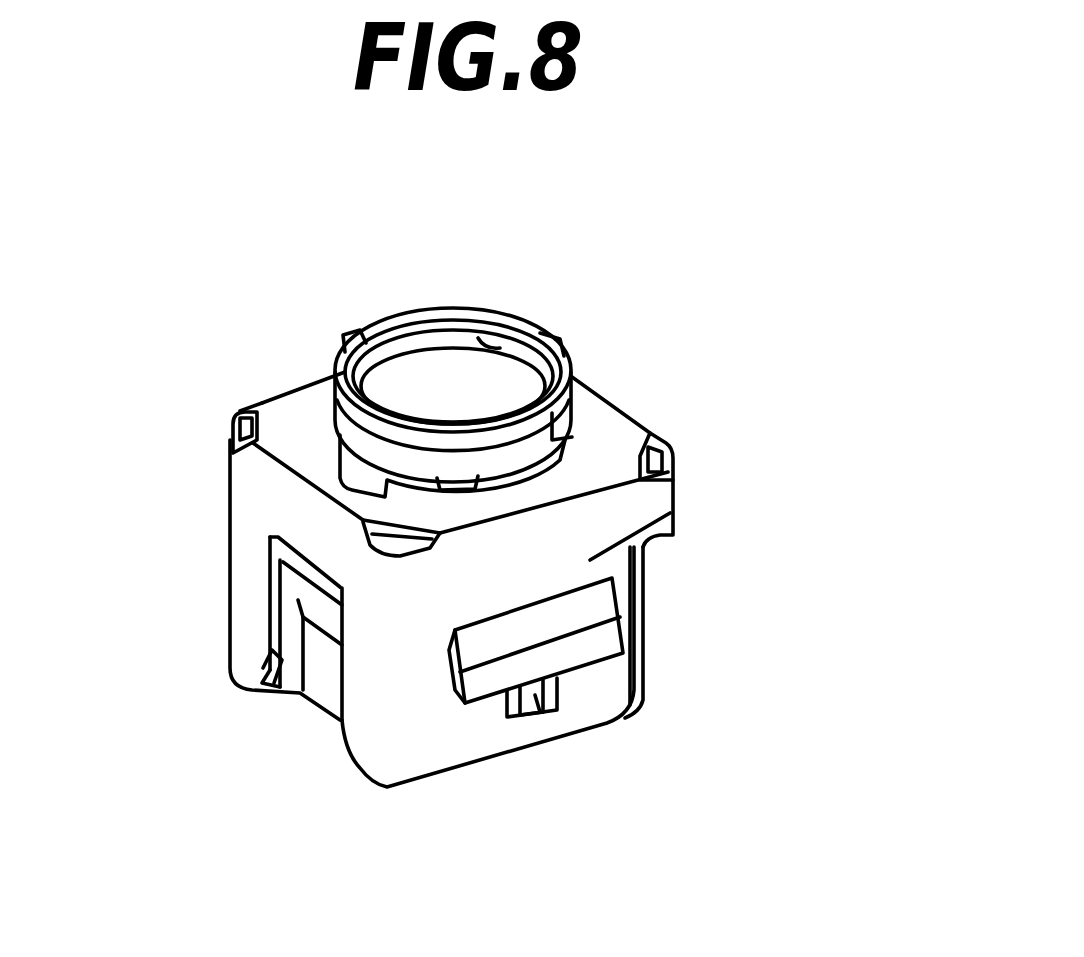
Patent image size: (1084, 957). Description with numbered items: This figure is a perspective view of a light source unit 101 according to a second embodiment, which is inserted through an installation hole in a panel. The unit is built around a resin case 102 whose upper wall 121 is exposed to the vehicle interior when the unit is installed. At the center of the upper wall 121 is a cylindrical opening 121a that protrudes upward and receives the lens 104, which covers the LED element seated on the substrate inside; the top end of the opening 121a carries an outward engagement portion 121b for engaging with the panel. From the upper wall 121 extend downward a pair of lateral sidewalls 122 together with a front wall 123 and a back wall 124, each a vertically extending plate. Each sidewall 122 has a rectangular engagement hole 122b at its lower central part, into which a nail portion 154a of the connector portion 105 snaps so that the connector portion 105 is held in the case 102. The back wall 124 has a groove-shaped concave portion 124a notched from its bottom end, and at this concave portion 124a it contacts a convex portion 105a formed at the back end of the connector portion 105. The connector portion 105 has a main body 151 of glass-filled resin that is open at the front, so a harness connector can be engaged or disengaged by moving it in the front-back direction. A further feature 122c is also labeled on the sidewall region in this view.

The light source unit 101 is at (766, 270).
The case 102 is at (668, 505).
The lens 104 is at (410, 387).
The connector portion 105 is at (323, 688).
The convex portion 105a is at (297, 597).
The upper wall 121 is at (293, 413).
The cylindrical opening 121a is at (483, 350).
The engagement portion 121b is at (433, 307).
The sidewall 122 is at (410, 757).
The engagement hole 122b is at (523, 727).
The engaging protrusion 122c is at (600, 603).
The front wall 123 is at (668, 535).
The back wall 124 is at (247, 477).
The concave portion 124a is at (285, 562).
The main body 151 is at (643, 663).
The nail portion 154a is at (547, 717).